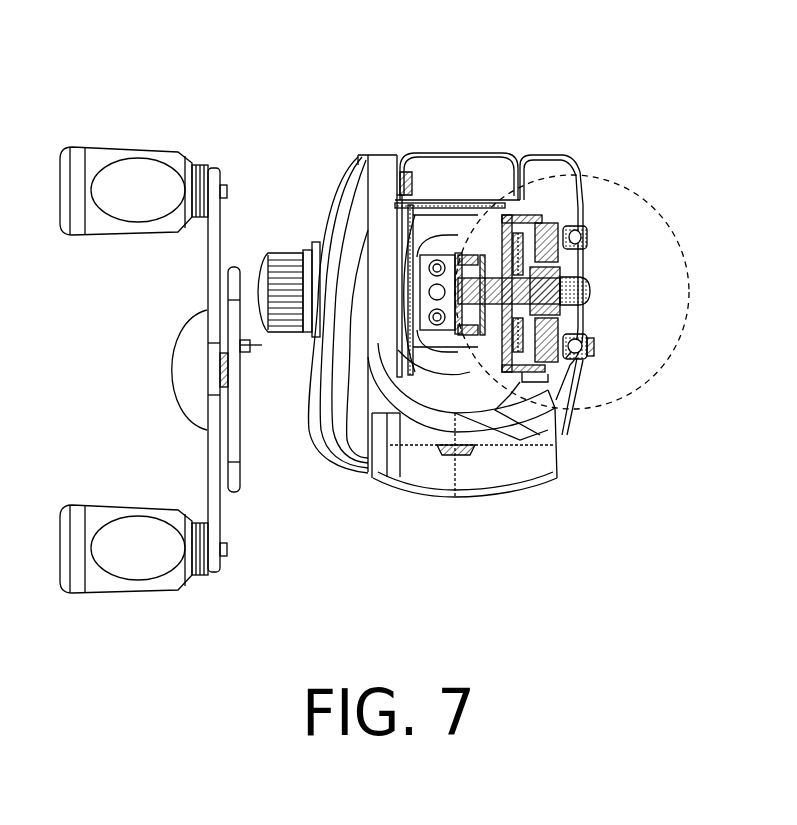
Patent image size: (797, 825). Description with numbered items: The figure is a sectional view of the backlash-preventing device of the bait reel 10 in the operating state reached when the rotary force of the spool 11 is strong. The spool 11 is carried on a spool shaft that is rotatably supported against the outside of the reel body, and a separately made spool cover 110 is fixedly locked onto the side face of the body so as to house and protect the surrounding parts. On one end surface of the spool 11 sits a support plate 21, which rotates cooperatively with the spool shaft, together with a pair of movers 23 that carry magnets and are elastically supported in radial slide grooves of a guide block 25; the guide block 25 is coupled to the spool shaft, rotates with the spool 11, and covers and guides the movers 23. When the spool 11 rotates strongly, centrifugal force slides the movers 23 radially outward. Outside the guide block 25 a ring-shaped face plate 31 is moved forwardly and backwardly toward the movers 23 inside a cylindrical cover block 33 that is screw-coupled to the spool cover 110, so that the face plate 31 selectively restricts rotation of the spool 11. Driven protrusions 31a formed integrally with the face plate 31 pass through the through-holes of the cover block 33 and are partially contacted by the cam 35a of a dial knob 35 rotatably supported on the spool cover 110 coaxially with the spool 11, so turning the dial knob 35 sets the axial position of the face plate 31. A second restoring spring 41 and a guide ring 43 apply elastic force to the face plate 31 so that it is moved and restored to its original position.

The bait reel 10 is at (276, 111).
The spool 11 is at (425, 275).
The support plate 21 is at (467, 340).
The pair of movers 23 is at (546, 461).
The guide block 25 is at (441, 224).
The ring-shaped face plate 31 is at (494, 191).
The driven protrusions 31a is at (562, 212).
The cover block 33 is at (557, 377).
The dial knob 35 is at (598, 290).
The cam 35a is at (582, 228).
The second restoring spring 41 is at (580, 362).
The guide ring 43 is at (592, 338).
The spool cover 110 is at (583, 180).